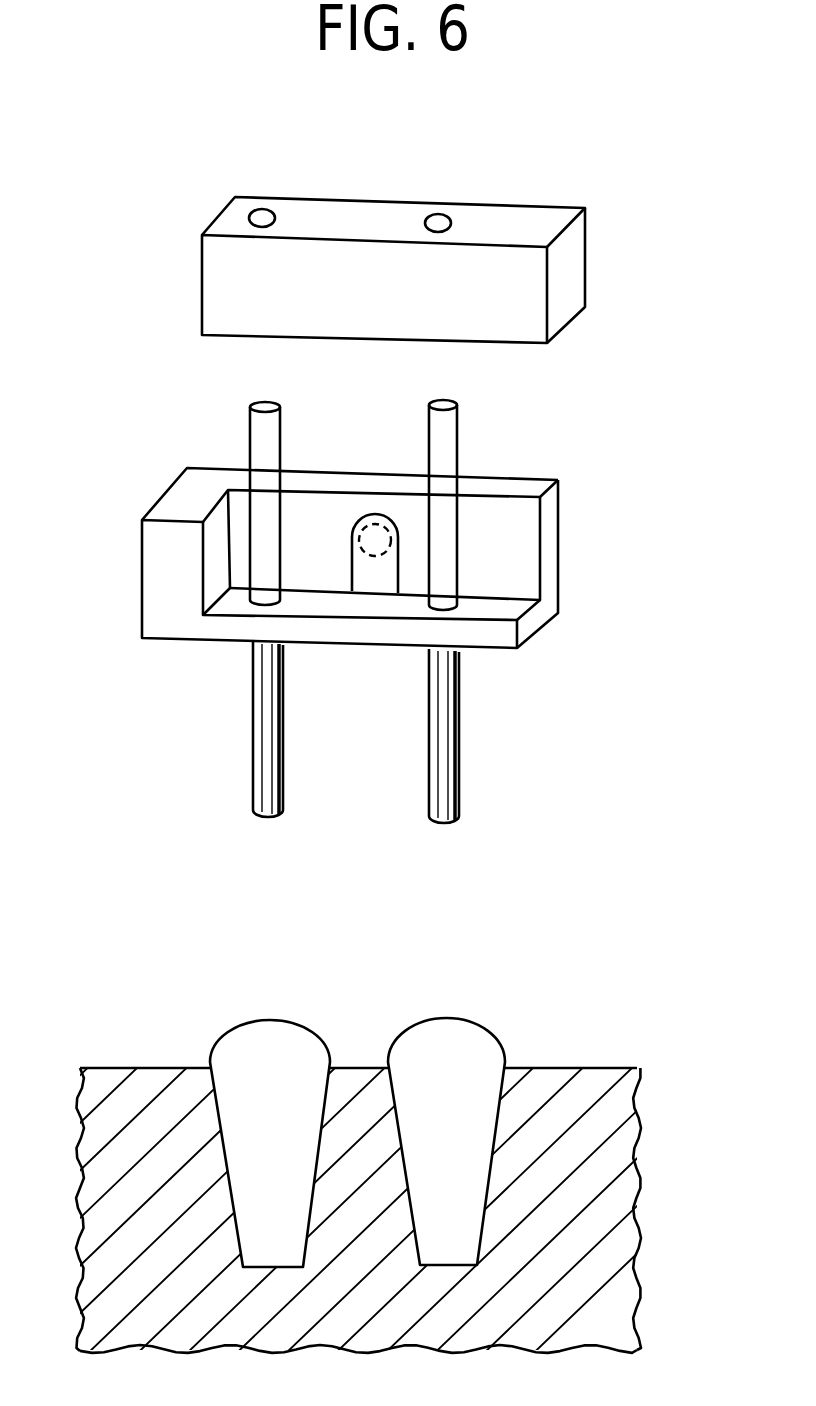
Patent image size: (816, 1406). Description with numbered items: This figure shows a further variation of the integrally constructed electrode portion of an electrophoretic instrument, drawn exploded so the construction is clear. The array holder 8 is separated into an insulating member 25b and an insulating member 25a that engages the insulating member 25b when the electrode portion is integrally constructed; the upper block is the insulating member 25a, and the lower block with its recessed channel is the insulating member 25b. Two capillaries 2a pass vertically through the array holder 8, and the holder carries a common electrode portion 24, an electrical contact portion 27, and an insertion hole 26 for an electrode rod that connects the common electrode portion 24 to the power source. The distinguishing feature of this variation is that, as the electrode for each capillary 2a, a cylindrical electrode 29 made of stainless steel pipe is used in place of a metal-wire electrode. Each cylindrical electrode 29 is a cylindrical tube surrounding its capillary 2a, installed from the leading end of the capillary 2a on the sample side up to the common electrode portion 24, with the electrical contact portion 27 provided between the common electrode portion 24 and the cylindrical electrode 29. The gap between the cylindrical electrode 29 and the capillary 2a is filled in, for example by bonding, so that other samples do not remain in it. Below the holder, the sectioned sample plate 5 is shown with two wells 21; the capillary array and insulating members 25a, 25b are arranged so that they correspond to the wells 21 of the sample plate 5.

The insulating member 25a is at (567, 272).
The insulating member 25b is at (559, 483).
The capillary 2a is at (456, 428).
The array holder 8 is at (359, 594).
The common electrode portion 24 is at (530, 596).
The electrical contact portion 27 is at (518, 619).
The insertion hole 26 is at (380, 538).
The cylindrical electrode 29 is at (461, 781).
The sample plate 5 is at (528, 1068).
The well 21 is at (489, 1190).